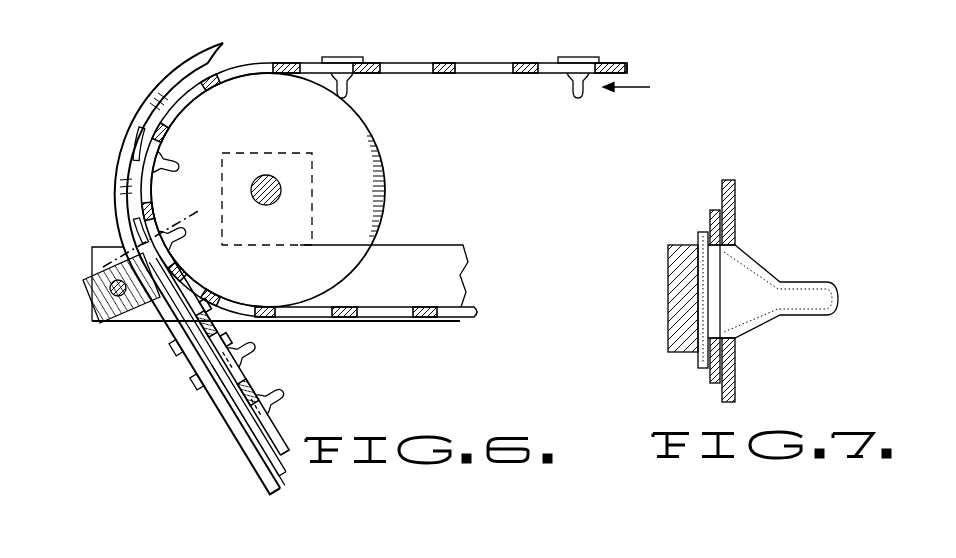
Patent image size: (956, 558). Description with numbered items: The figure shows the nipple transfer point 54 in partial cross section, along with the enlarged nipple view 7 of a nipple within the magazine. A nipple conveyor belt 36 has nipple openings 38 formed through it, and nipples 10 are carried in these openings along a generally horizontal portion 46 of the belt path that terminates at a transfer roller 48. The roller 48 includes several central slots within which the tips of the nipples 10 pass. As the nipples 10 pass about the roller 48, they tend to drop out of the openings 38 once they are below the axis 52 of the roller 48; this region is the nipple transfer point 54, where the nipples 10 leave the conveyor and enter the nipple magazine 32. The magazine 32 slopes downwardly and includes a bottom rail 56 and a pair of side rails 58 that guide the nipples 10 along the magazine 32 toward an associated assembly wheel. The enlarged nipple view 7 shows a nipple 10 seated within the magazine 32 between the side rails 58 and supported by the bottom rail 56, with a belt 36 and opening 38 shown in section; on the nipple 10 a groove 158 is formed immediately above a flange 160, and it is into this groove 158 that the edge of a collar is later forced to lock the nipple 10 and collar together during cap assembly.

In FIG. 6, the section line of FIG. 7 is at (103, 248).
In FIG. 6, the nipple 10 is at (582, 62).
In FIG. 7, the nipple 10 is at (804, 273).
In FIG. 6, the nipple magazine 32 is at (290, 489).
In FIG. 6, the nipple conveyor belt 36 is at (623, 60).
In FIG. 7, the nipple conveyor belt 36 is at (730, 178).
In FIG. 6, the nipple opening 38 is at (455, 67).
In FIG. 7, the nipple opening 38 is at (735, 253).
In FIG. 6, the generally horizontal portion 46 is at (365, 62).
In FIG. 6, the transfer roller 48 is at (385, 160).
In FIG. 6, the axis 52 is at (268, 178).
In FIG. 6, the nipple transfer point 54 is at (100, 163).
In FIG. 6, the bottom rail 56 is at (205, 383).
In FIG. 7, the bottom rail 56 is at (680, 245).
In FIG. 7, the side rail 58 is at (715, 215).
In FIG. 6, the groove 158 is at (262, 467).
In FIG. 6, the flange 160 is at (575, 60).
In FIG. 7, the flange 160 is at (700, 362).